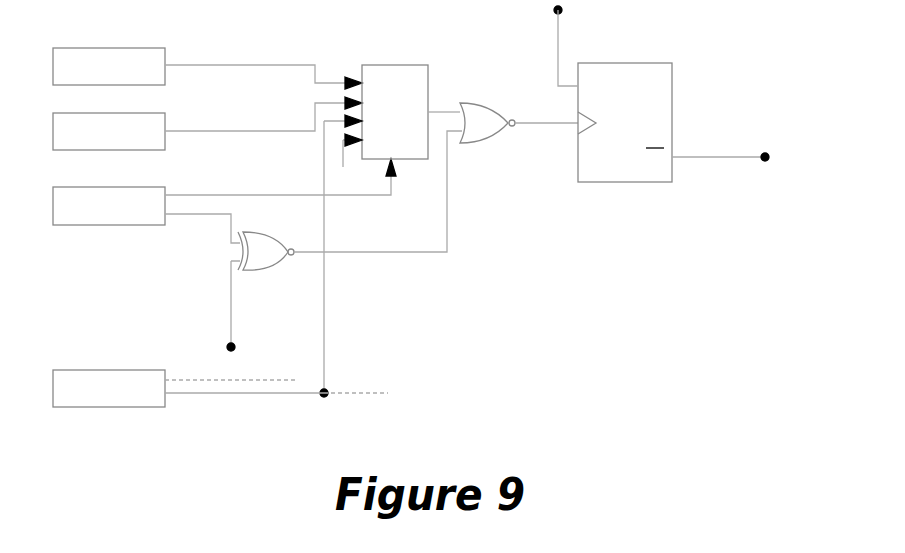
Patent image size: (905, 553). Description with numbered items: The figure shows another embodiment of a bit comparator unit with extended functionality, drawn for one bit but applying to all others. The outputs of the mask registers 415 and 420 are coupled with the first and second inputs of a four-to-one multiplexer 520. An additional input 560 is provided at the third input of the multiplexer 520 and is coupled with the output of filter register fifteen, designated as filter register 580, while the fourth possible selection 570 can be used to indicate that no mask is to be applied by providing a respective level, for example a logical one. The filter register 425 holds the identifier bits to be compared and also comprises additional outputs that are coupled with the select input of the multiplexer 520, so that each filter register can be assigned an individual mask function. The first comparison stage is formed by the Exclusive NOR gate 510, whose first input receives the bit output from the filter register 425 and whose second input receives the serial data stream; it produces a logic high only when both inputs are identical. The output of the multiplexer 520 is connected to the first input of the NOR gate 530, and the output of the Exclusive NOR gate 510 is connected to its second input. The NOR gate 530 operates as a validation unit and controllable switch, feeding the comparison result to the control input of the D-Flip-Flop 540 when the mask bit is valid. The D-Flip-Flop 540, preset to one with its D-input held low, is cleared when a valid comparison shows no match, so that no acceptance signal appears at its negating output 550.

The mask register 415 is at (100, 48).
The mask register 420 is at (165, 127).
The filter register 425 is at (90, 225).
The Exclusive NOR gate 510 is at (280, 265).
The 4:1 multiplexer 520 is at (411, 101).
The NOR gate 530 is at (519, 112).
The D-Flip-Flop 540 is at (639, 63).
The negating output 550 is at (739, 167).
The additional input 560 is at (324, 327).
The fourth possible selection 570 is at (351, 162).
The filter register 15 580 is at (88, 407).